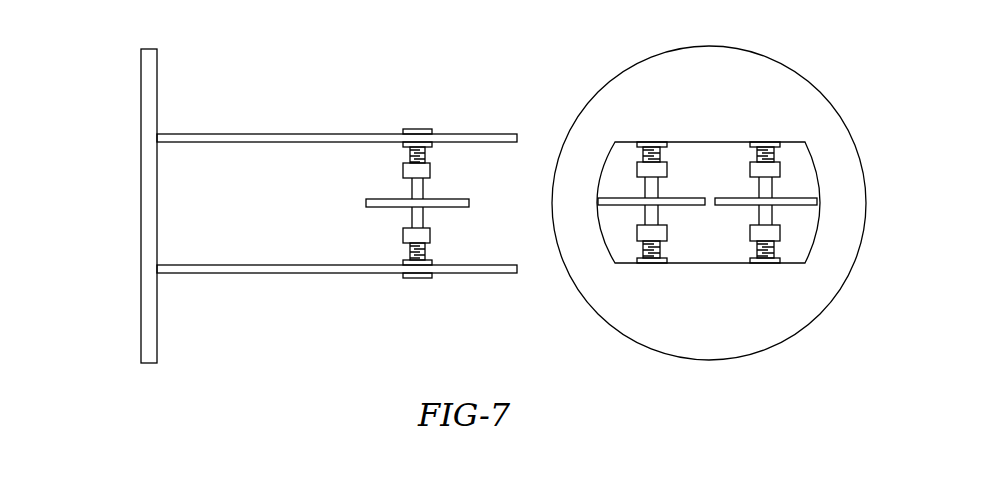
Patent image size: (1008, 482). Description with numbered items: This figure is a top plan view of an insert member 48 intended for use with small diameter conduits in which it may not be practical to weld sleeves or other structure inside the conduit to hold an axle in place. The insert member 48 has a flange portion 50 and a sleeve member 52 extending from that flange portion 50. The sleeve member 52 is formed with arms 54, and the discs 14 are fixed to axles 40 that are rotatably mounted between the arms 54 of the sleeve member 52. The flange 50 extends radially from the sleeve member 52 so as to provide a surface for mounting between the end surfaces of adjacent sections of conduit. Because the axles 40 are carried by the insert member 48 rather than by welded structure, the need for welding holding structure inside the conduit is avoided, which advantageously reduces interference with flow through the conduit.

The insert member 48 is at (240, 85).
The flange portion 50 is at (141, 65).
The sleeve member 52 is at (470, 122).
The arms 54 is at (337, 143).
The axle 40 is at (423, 189).
The disc 14 is at (453, 207).